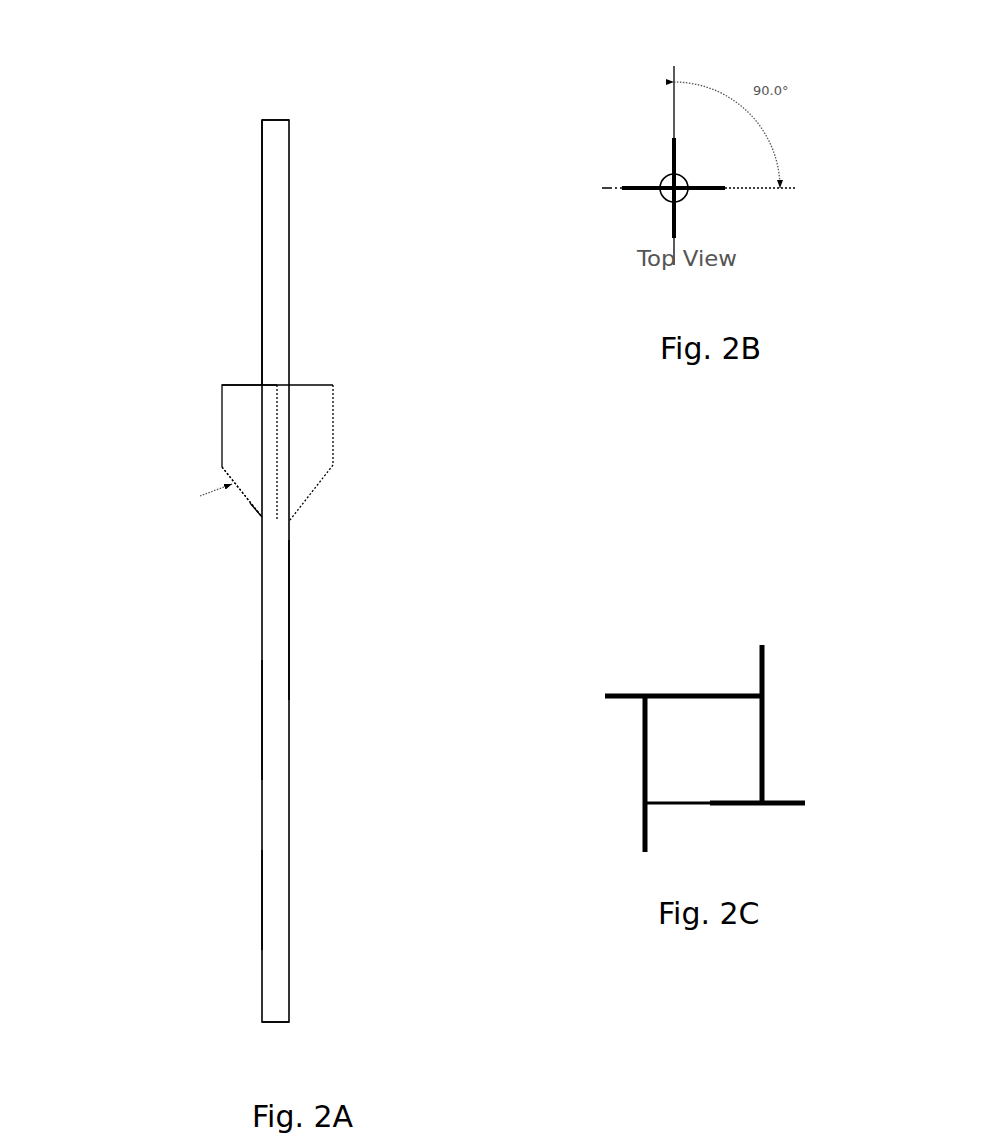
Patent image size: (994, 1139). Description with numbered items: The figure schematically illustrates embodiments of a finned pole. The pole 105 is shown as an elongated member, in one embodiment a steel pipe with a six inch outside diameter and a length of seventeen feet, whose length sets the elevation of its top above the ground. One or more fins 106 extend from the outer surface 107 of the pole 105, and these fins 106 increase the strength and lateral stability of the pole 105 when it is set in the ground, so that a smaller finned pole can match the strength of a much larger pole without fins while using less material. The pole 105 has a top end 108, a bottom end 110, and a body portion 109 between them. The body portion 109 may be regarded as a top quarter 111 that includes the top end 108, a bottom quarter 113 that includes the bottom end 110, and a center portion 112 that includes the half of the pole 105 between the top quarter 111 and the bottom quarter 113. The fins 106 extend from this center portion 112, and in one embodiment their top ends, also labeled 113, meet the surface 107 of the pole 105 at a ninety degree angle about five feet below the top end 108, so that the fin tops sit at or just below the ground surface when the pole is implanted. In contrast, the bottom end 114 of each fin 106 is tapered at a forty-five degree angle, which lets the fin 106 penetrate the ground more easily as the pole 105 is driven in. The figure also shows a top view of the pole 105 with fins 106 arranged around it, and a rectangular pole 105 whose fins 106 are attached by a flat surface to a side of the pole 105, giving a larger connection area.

In FIG. 2A, the pole 105 is at (213, 262).
In FIG. 2B, the pole 105 is at (623, 123).
In FIG. 2C, the pole 105 is at (780, 772).
In FIG. 2A, the fins 106 is at (250, 441).
In FIG. 2B, the fins 106 is at (672, 215).
In FIG. 2C, the fins 106 is at (615, 688).
In FIG. 2A, the outer surface 107 is at (309, 632).
In FIG. 2A, the top end 108 is at (282, 100).
In FIG. 2A, the body portion 109 is at (198, 573).
In FIG. 2A, the bottom end 110 is at (283, 1027).
In FIG. 2A, the top quarter 111 is at (240, 148).
In FIG. 2A, the center portion 112 is at (205, 720).
In FIG. 2A, the bottom quarter 113 is at (247, 368).
In FIG. 2A, the bottom end of fin 114 is at (248, 500).